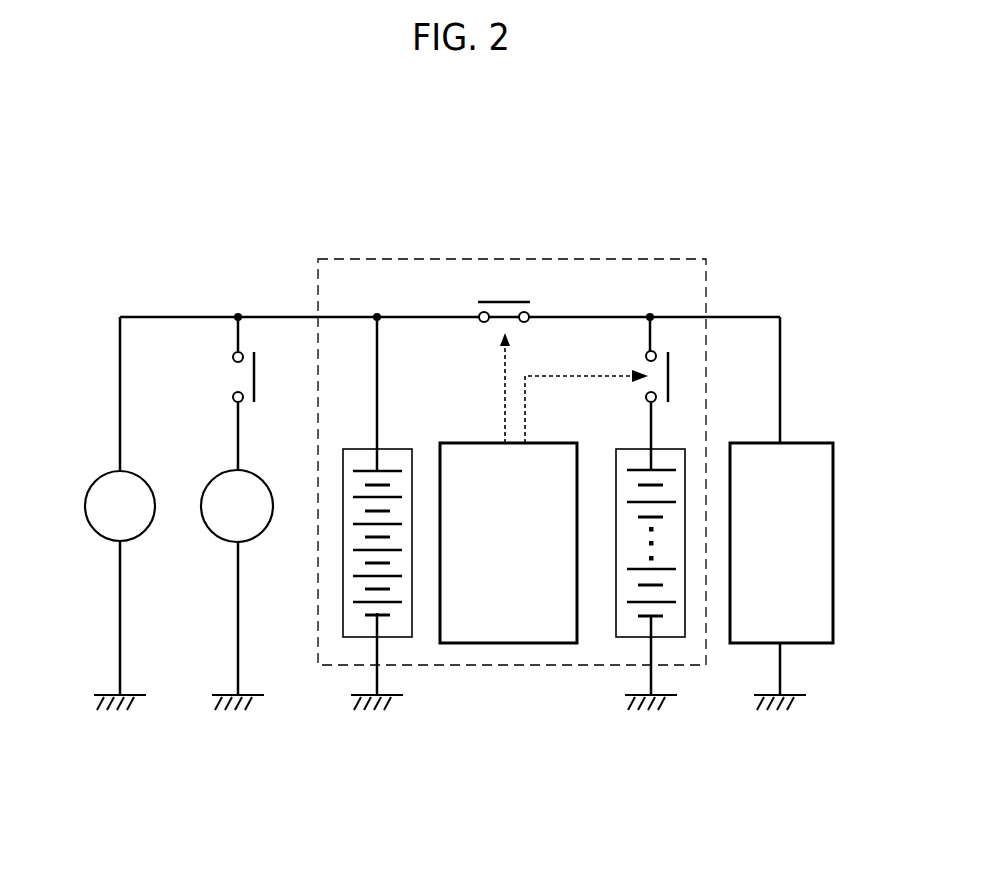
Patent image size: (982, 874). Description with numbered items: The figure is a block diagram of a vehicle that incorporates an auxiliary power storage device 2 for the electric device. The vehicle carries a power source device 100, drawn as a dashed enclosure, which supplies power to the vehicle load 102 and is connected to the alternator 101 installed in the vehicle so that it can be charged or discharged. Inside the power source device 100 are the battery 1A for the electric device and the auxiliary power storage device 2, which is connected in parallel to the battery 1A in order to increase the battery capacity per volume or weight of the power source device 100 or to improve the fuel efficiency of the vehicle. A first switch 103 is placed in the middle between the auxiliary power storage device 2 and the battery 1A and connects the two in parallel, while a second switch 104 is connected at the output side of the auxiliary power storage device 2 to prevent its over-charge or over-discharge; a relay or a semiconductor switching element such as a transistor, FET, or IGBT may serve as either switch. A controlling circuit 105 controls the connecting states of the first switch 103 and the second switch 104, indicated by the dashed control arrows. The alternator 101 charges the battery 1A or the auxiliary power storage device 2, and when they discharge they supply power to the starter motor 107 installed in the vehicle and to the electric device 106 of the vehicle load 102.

The power source device 100 is at (608, 259).
The alternator 101 is at (143, 535).
The vehicle load 102 is at (703, 762).
The first switch 103 is at (500, 287).
The second switch 104 is at (683, 376).
The controlling circuit 105 is at (493, 645).
The electric device 106 is at (763, 645).
The starter motor 107 is at (263, 533).
The battery for the electric device 1A is at (392, 449).
The auxiliary power storage device 2 is at (686, 468).